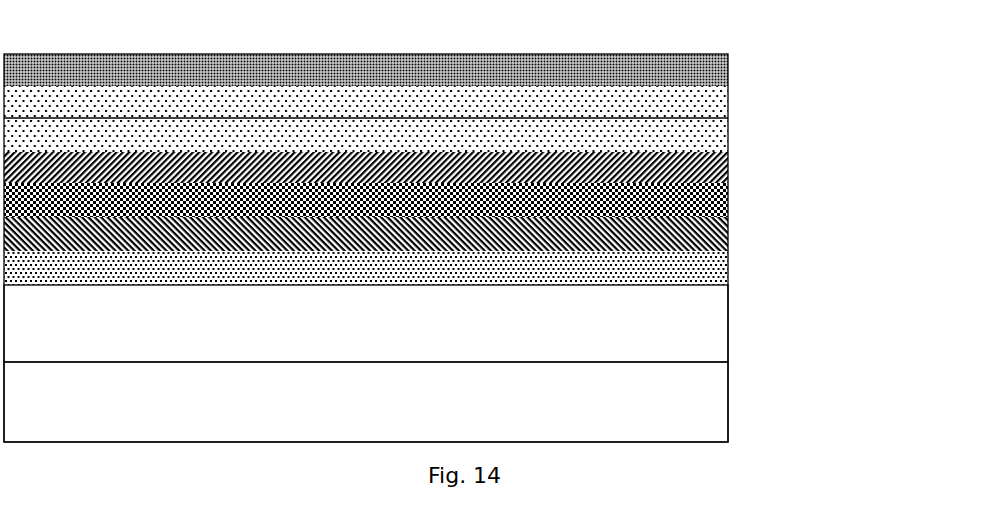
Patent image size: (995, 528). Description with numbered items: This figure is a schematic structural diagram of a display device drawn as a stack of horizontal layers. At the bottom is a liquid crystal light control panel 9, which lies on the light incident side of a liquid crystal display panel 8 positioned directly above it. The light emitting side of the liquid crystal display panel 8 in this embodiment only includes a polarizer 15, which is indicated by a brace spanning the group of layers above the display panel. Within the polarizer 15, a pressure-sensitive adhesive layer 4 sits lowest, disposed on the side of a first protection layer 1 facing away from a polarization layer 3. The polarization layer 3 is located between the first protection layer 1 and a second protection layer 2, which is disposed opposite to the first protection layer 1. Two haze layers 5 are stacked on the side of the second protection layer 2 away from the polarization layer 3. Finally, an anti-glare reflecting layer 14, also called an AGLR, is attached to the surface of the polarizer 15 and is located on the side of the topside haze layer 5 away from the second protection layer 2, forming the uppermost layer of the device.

The anti-glare reflecting layer 14 is at (710, 69).
The haze layer 5 is at (710, 102).
The second protection layer 2 is at (728, 169).
The polarization layer 3 is at (728, 201).
The first protection layer 1 is at (728, 234).
The pressure-sensitive adhesive layer 4 is at (705, 262).
The liquid crystal display panel 8 is at (693, 322).
The liquid crystal light control panel 9 is at (693, 413).
The polarizer 15 is at (812, 124).